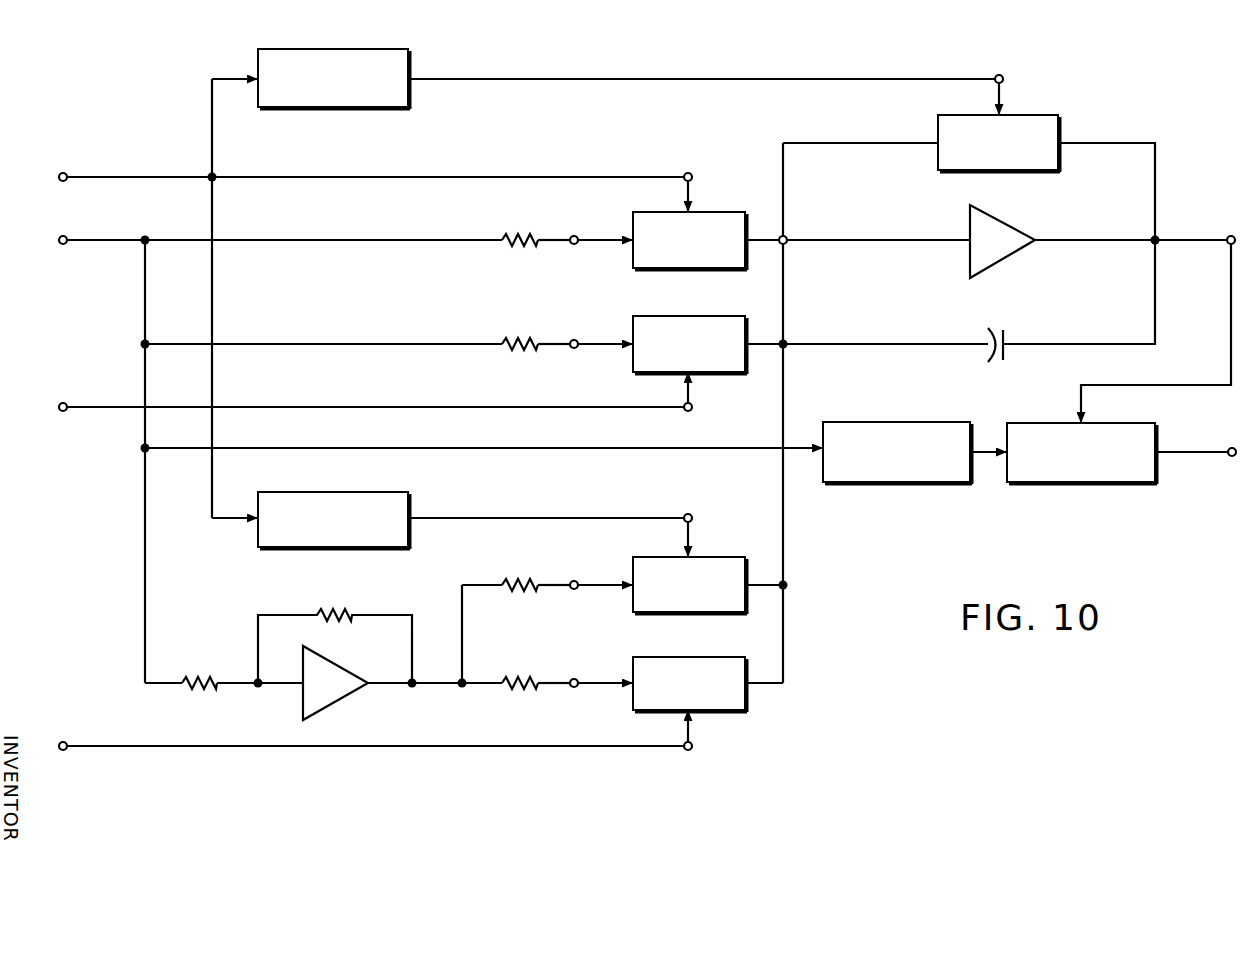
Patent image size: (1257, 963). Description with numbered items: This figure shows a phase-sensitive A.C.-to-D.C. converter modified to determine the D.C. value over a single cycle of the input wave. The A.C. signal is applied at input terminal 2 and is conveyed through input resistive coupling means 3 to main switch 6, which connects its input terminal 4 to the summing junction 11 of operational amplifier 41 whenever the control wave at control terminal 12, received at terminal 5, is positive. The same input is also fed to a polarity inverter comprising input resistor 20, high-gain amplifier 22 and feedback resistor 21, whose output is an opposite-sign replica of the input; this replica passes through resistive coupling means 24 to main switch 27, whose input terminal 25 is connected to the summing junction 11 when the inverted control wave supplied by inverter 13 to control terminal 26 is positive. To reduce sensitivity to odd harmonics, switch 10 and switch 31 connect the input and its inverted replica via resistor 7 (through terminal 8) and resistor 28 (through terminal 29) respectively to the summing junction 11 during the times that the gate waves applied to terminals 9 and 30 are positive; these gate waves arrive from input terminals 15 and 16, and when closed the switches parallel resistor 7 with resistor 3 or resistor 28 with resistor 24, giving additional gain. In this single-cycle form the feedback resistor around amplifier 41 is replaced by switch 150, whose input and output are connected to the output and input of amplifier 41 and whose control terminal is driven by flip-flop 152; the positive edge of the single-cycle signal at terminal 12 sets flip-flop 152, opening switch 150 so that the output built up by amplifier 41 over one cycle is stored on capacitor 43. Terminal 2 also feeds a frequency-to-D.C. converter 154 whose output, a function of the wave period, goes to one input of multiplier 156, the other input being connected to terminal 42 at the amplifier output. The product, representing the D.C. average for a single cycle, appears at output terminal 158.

The input terminal 2 is at (59, 242).
The input resistive coupling means 3 is at (520, 247).
The input terminal of main switch 4 is at (574, 247).
The control terminal 5 is at (690, 173).
The main switch 6 is at (725, 268).
The resistor 7 is at (516, 351).
The terminal 8 is at (574, 351).
The gate terminal of switch 10 9 is at (692, 408).
The switch 10 is at (688, 316).
The summing junction 11 is at (786, 237).
The control terminal 12 is at (66, 174).
The inverter 13 is at (270, 547).
The input terminal 15 is at (65, 410).
The input terminal 16 is at (65, 749).
The input resistor 20 is at (196, 690).
The feedback resistor 21 is at (337, 610).
The high-gain amplifier 22 is at (336, 694).
The resistive coupling means 24 is at (520, 592).
The input terminal of switch 27 25 is at (574, 592).
The control terminal of switch 27 26 is at (685, 515).
The main switch 27 is at (715, 612).
The resistor 28 is at (516, 690).
The terminal 29 is at (574, 690).
The gate terminal of switch 31 30 is at (687, 750).
The switch 31 is at (725, 710).
The operational amplifier 41 is at (1005, 226).
The terminal 42 is at (1228, 237).
The capacitor 43 is at (995, 330).
The switch 150 is at (1060, 133).
The flip-flop 152 is at (345, 107).
The converter 154 is at (900, 482).
The multiplier 156 is at (1070, 482).
The output terminal 158 is at (1230, 456).